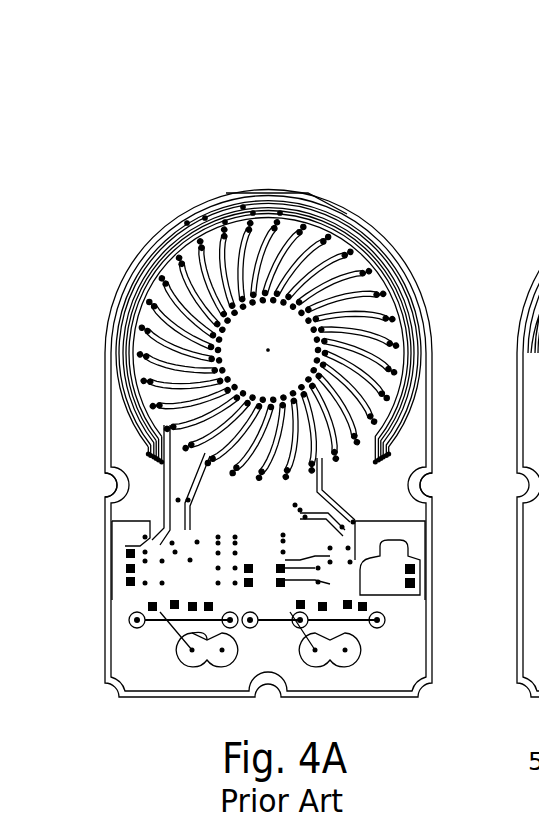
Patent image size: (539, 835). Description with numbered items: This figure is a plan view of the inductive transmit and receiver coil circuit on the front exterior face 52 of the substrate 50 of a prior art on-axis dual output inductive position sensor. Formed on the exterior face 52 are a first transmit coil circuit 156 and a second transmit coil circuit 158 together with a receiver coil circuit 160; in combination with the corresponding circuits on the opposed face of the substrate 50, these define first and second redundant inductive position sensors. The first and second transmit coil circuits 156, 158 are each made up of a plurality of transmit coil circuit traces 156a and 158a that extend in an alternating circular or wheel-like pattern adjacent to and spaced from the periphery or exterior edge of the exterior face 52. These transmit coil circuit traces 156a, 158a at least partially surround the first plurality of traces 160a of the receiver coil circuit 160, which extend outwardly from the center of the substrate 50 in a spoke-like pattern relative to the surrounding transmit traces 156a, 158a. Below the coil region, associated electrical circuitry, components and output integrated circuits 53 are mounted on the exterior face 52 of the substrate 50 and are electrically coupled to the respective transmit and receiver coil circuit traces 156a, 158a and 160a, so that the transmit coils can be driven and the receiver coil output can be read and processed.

The substrate 50 is at (177, 700).
The exterior face 52 is at (130, 497).
The output integrated circuits 53 is at (158, 608).
The first transmit coil circuit 156 is at (349, 211).
The second transmit coil circuit 158 is at (538, 222).
The transmit coil circuit traces 156a is at (205, 218).
The transmit coil circuit traces 158a is at (187, 223).
The receiver coil circuit 160 is at (172, 274).
The receiver coil circuit traces 160a is at (163, 287).